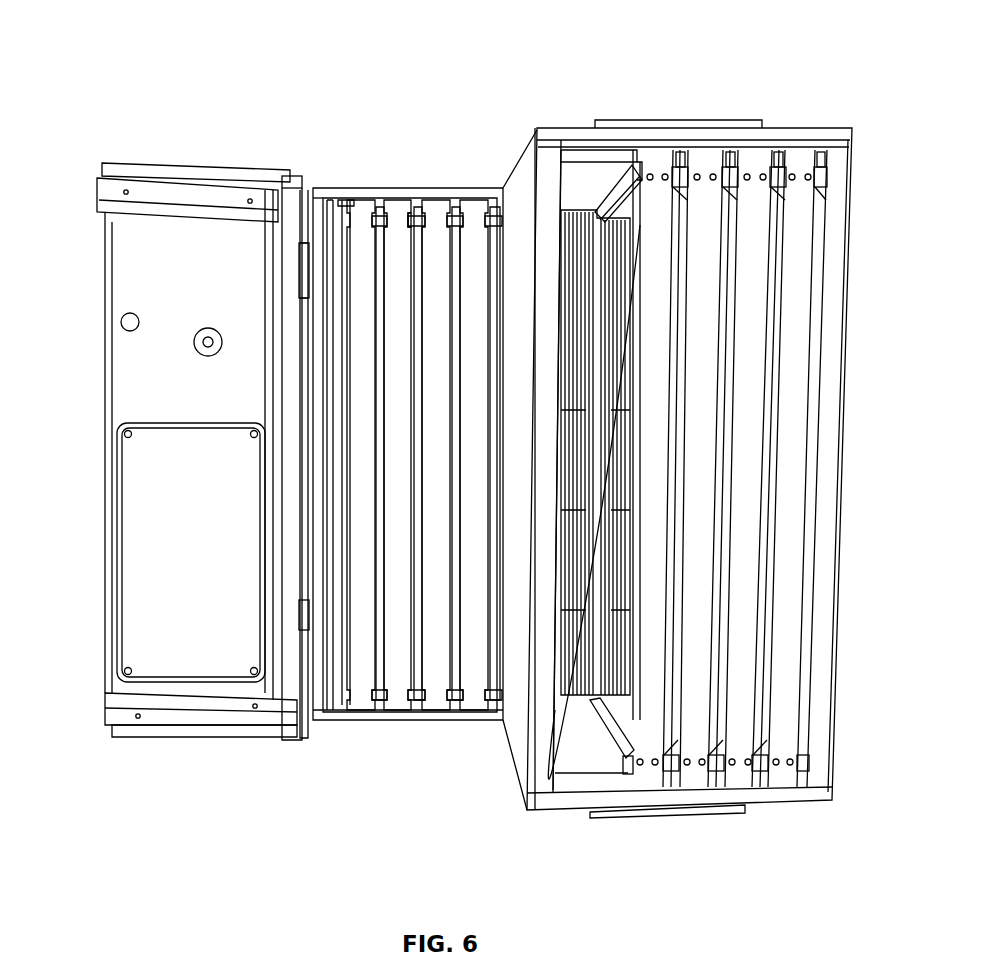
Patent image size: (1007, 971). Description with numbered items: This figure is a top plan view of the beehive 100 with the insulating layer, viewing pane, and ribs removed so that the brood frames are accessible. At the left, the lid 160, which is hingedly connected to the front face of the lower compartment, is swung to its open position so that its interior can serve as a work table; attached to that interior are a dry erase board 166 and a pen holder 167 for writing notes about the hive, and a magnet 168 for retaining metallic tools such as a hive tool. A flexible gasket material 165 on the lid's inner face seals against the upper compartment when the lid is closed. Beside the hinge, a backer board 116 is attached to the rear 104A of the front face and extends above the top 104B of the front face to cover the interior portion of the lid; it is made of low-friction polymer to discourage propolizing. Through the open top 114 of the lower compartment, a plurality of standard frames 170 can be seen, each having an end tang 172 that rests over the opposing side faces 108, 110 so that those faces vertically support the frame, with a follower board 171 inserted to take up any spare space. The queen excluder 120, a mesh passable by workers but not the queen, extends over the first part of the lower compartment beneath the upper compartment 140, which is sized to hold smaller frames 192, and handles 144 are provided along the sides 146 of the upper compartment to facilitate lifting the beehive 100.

The beehive 100 is at (116, 45).
The rear of the front face 104A is at (325, 542).
The top of the front face 104B is at (292, 700).
The side face 108 is at (476, 722).
The side face 110 is at (313, 190).
The open top 114 is at (414, 198).
The backer board 116 is at (326, 338).
The queen excluder 120 is at (575, 705).
The upper compartment 140 is at (607, 150).
The handles 144 is at (680, 120).
The sides of upper compartment 146 is at (558, 136).
The lid 160 is at (172, 735).
The flexible gasket material 165 is at (107, 636).
The dry erase board 166 is at (135, 468).
The pen holder 167 is at (120, 320).
The magnet 168 is at (200, 330).
The frames 170 is at (368, 236).
The follower board 171 is at (330, 240).
The end tang 172 is at (405, 214).
The smaller frames 192 is at (808, 162).